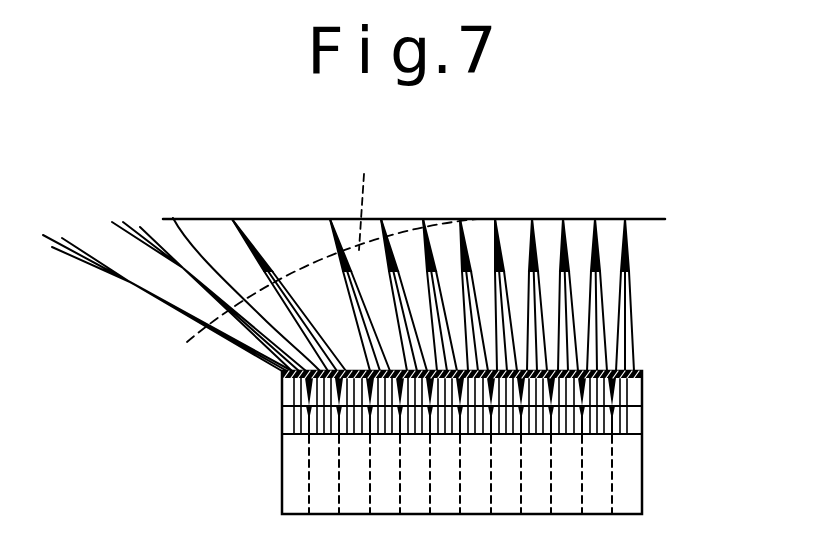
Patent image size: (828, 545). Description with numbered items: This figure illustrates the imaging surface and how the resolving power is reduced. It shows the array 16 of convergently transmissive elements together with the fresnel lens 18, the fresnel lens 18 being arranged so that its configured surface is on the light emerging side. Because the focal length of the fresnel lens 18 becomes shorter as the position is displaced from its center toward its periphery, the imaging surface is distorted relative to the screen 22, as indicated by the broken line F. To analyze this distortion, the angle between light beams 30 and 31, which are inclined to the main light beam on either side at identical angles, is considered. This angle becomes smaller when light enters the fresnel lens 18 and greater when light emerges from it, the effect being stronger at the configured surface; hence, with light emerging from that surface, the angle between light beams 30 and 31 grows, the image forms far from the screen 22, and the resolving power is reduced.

The array of convergently transmissive elements 16 is at (288, 486).
The fresnel lens 18 is at (284, 381).
The screen 22 is at (194, 219).
The light beam 30 is at (305, 313).
The light beam 31 is at (173, 220).
The broken line indicating distorted imaging surface F is at (332, 243).